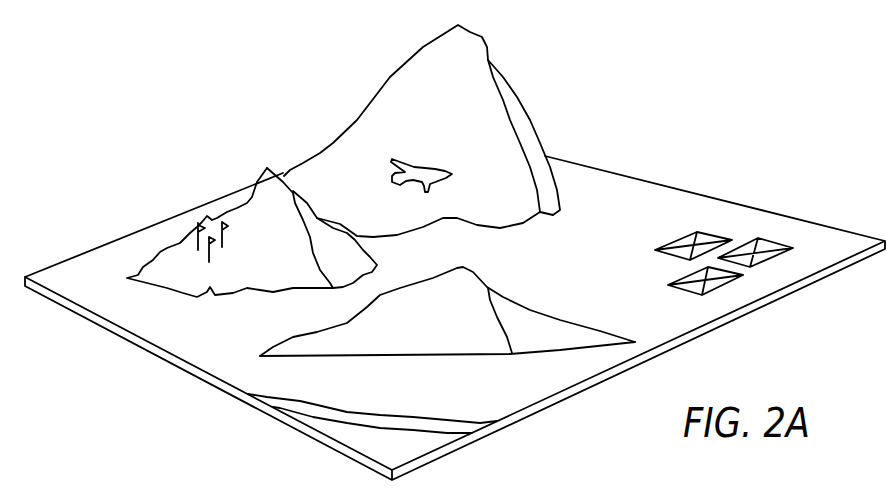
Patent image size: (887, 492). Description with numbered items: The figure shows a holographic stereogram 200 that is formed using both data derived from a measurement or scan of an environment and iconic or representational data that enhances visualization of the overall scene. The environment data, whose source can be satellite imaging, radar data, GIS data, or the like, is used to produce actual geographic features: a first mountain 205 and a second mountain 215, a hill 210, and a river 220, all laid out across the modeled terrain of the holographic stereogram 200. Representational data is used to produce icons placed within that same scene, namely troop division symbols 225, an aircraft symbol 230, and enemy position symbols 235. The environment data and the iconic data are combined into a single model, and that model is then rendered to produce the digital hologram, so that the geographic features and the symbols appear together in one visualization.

The holographic stereogram 200 is at (820, 240).
The mountain 205 is at (510, 85).
The hill 210 is at (540, 317).
The mountain 215 is at (243, 192).
The river 220 is at (398, 415).
The troop division symbols 225 is at (712, 230).
The aircraft symbol 230 is at (408, 162).
The enemy position symbols 235 is at (197, 224).